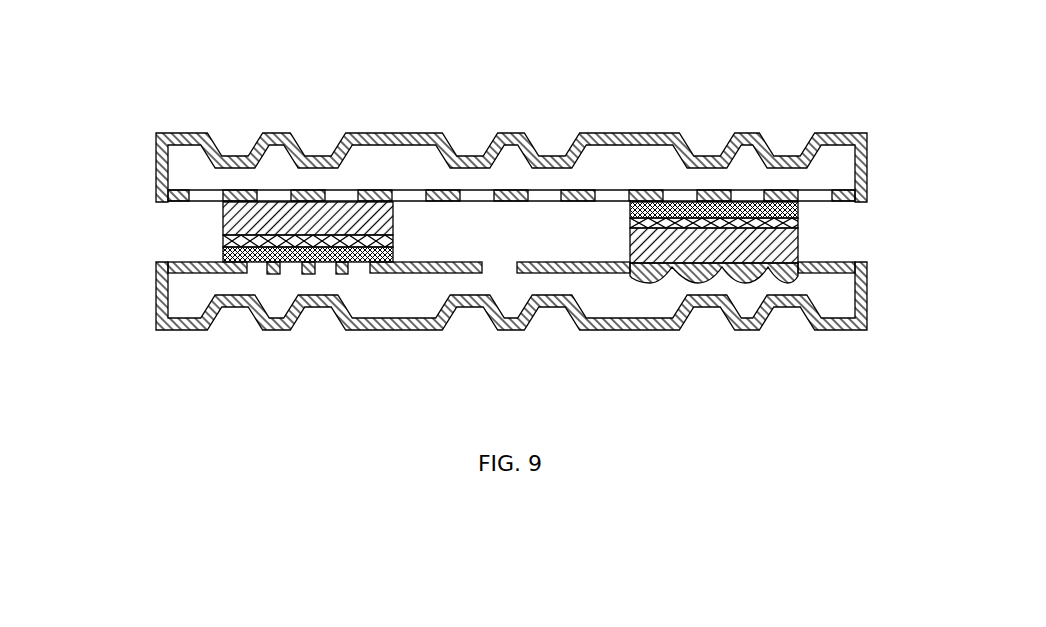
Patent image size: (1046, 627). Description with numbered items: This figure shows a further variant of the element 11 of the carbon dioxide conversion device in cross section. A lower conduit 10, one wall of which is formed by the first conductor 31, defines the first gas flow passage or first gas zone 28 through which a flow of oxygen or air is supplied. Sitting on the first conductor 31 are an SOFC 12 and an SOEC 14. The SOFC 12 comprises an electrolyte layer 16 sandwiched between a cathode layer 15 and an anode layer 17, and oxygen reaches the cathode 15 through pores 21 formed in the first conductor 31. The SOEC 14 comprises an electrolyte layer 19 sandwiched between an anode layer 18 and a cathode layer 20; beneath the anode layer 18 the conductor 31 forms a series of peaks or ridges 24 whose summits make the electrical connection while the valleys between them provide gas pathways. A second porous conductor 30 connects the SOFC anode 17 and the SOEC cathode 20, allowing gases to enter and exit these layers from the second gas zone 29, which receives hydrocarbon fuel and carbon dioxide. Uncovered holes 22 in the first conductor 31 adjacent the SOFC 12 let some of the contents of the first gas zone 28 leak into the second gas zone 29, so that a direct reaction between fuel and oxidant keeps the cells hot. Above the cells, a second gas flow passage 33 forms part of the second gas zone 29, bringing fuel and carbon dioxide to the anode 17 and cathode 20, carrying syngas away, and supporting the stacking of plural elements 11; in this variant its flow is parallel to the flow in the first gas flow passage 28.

The conduit 10 is at (158, 306).
The element 11 is at (162, 100).
The SOFC 12 is at (217, 223).
The SOEC 14 is at (795, 227).
The cathode layer 15 is at (223, 256).
The electrolyte layer 16 is at (235, 241).
The anode layer 17 is at (235, 218).
The anode layer 18 is at (783, 243).
The electrolyte layer 19 is at (798, 222).
The cathode layer 20 is at (799, 209).
The pores 21 is at (290, 270).
The holes 22 is at (500, 268).
The peaks or ridges 24 is at (738, 265).
The first gas zone 28 is at (400, 305).
The second gas zone 29 is at (505, 240).
The second porous conductor 30 is at (508, 195).
The first conductor 31 is at (604, 268).
The second gas flow passage 33 is at (397, 178).